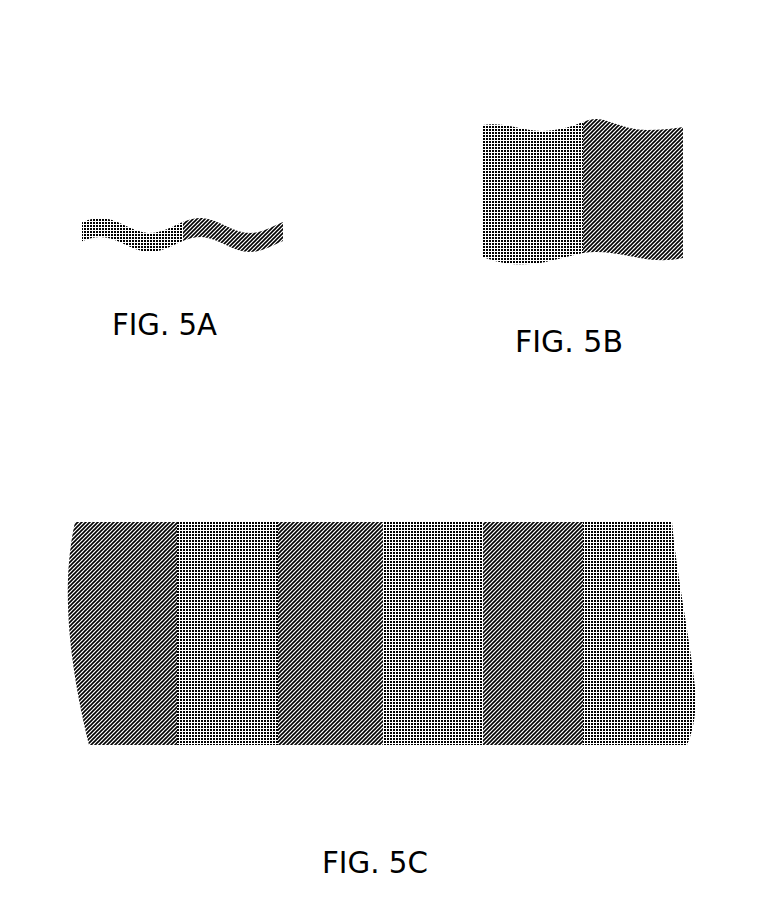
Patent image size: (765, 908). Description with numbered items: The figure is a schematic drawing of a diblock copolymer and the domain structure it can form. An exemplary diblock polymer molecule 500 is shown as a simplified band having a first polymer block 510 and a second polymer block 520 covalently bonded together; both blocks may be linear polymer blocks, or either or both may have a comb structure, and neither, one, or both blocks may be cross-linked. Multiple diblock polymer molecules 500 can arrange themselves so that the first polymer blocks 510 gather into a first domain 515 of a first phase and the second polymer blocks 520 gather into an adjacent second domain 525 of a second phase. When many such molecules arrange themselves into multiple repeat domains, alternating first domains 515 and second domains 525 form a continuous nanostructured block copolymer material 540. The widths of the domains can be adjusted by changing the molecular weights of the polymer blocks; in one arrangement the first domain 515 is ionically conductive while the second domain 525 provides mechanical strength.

In FIG. 5A, the diblock polymer molecule 500 is at (169, 145).
In FIG. 5A, the first polymer block 510 is at (151, 246).
In FIG. 5A, the second polymer block 520 is at (266, 238).
In FIG. 5B, the first domain 515 is at (553, 200).
In FIG. 5C, the first domain 515 is at (253, 626).
In FIG. 5B, the second domain 525 is at (650, 200).
In FIG. 5C, the second domain 525 is at (145, 626).
In FIG. 5C, the nanostructured block copolymer material 540 is at (372, 574).